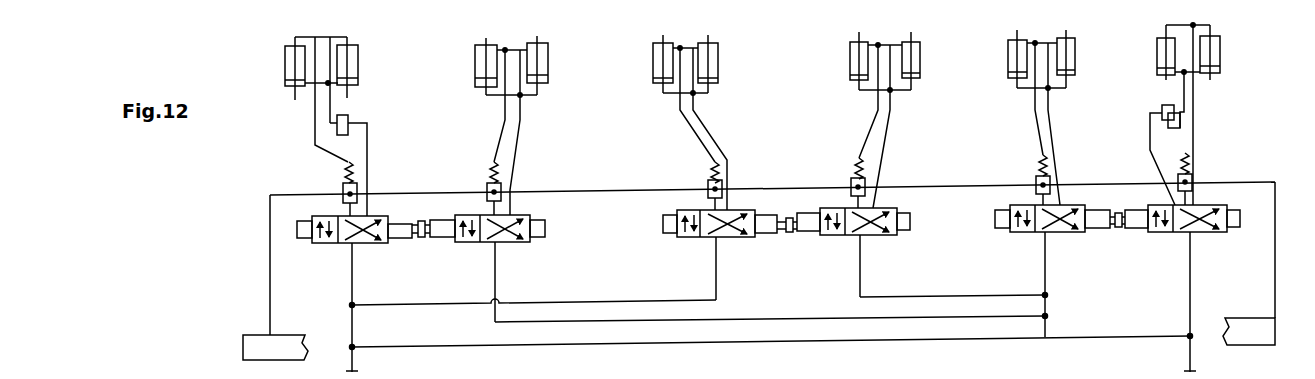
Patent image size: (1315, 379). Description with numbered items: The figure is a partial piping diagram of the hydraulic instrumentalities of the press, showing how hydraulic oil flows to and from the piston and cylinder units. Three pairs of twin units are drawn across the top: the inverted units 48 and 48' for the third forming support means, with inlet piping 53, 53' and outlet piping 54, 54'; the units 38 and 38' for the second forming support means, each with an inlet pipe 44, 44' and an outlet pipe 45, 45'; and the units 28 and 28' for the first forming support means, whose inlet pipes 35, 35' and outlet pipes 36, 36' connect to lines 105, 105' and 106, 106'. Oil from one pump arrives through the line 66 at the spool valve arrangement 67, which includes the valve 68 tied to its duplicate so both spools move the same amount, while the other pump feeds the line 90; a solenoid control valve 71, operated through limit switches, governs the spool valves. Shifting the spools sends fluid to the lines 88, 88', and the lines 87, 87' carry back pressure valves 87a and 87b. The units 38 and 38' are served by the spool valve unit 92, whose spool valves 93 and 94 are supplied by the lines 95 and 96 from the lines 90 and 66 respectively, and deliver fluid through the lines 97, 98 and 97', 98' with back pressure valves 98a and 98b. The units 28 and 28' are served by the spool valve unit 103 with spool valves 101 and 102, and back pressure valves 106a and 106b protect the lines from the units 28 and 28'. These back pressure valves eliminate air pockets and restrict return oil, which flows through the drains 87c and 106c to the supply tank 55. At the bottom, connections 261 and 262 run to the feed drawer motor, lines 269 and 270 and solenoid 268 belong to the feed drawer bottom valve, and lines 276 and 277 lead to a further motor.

The piston and cylinder unit 48' is at (320, 61).
The inlet piping 53' is at (333, 61).
The outlet piping 54' is at (355, 83).
The line 87' is at (308, 123).
The line 88' is at (379, 164).
The back pressure valve 87b is at (344, 190).
The drain 87c is at (272, 290).
The supply tank 55 is at (256, 337).
The solenoid control valve 71 is at (356, 248).
The spool valve arrangement 67 is at (421, 244).
The valve 68 is at (482, 246).
The piston and cylinder unit 48 is at (514, 52).
The inlet piping 53 is at (517, 48).
The outlet piping 54 is at (538, 93).
The line 87 is at (476, 128).
The line 88 is at (540, 155).
The back pressure valve 87a is at (488, 186).
The supply line 96 is at (771, 323).
The piston and cylinder unit 38' is at (697, 73).
The inlet pipe 44' is at (709, 50).
The outlet pipe 45' is at (712, 71).
The line 98' is at (684, 127).
The line 97' is at (734, 151).
The back pressure valve 98b is at (723, 188).
The spool valve 94 is at (720, 246).
The spool valve unit 92 is at (789, 240).
The spool valve 93 is at (846, 242).
The piston and cylinder unit 38 is at (890, 71).
The inlet pipe 44 is at (901, 48).
The outlet pipe 45 is at (907, 102).
The line 98 is at (848, 124).
The line 97 is at (907, 149).
The back pressure valve 98a is at (852, 184).
The supply line 95 is at (994, 296).
The piston and cylinder unit 28' is at (1053, 73).
The inlet pipe 35' is at (1060, 46).
The outlet pipe 36' is at (1062, 101).
The line 106' is at (1009, 121).
The line 105' is at (1081, 146).
The back pressure valve 106b is at (1037, 184).
The spool valve 102 is at (1050, 242).
The spool valve unit 103 is at (1117, 236).
The spool valve 101 is at (1200, 240).
The piston and cylinder unit 28 is at (1192, 70).
The inlet pipe 35 is at (1212, 14).
The outlet pipe 36 is at (1216, 98).
The line 105 is at (1228, 115).
The line 106 is at (1143, 138).
The back pressure valve 106a is at (1193, 178).
The supply line 90 is at (1188, 344).
The drain 106c is at (1278, 334).
The supply line 66 is at (350, 356).
The line 269 is at (438, 366).
The line 270 is at (494, 366).
The solenoid 268 is at (568, 372).
The connection 262 is at (650, 364).
The connection 261 is at (708, 372).
The line 277 is at (1162, 378).
The line 276 is at (1223, 372).